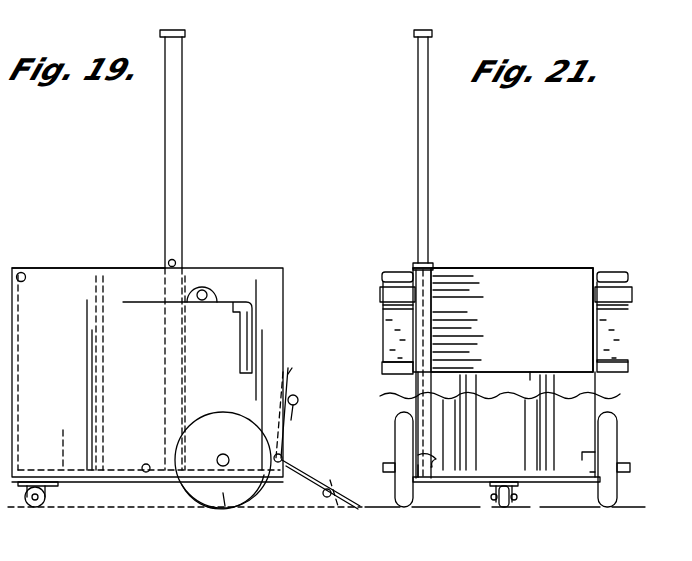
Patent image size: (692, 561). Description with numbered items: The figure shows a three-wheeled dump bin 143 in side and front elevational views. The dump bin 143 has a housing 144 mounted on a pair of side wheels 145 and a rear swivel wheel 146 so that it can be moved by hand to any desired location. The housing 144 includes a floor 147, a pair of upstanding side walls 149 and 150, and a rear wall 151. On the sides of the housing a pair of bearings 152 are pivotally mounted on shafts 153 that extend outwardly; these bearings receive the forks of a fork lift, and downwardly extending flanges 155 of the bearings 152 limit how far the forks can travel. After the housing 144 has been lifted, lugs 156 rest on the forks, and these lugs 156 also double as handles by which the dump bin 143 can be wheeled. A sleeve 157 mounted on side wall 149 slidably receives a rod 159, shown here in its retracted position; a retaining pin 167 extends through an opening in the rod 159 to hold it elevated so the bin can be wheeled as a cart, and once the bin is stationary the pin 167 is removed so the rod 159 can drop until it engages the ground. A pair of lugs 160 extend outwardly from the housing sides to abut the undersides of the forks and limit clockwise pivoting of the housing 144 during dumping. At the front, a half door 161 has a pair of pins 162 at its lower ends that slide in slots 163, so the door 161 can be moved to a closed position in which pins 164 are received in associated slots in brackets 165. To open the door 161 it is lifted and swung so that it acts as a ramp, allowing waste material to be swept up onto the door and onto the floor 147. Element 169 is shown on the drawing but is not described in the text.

In FIG. 19, the dump bin 143 is at (244, 225).
In FIG. 21, the dump bin 143 is at (531, 252).
In FIG. 19, the housing 144 is at (88, 268).
In FIG. 21, the housing 144 is at (514, 268).
In FIG. 19, the side wheels 145 is at (222, 508).
In FIG. 21, the side wheels 145 is at (420, 504).
In FIG. 19, the rear swivel wheel 146 is at (55, 506).
In FIG. 21, the rear swivel wheel 146 is at (505, 508).
In FIG. 19, the floor 147 is at (66, 452).
In FIG. 21, the floor 147 is at (502, 474).
In FIG. 19, the side wall 149 is at (133, 270).
In FIG. 21, the side wall 149 is at (434, 301).
In FIG. 21, the side wall 150 is at (594, 297).
In FIG. 19, the rear wall 151 is at (18, 323).
In FIG. 21, the rear wall 151 is at (552, 268).
In FIG. 19, the bearings 152 is at (217, 296).
In FIG. 21, the bearings 152 is at (381, 280).
In FIG. 19, the shafts 153 is at (203, 288).
In FIG. 21, the shafts 153 is at (378, 294).
In FIG. 19, the flanges 155 is at (236, 348).
In FIG. 21, the flanges 155 is at (384, 327).
In FIG. 19, the lugs 156 is at (19, 278).
In FIG. 21, the lugs 156 is at (397, 272).
In FIG. 19, the sleeve 157 is at (167, 373).
In FIG. 21, the sleeve 157 is at (440, 285).
In FIG. 19, the rod 159 is at (165, 144).
In FIG. 21, the rod 159 is at (431, 125).
In FIG. 19, the lugs 160 is at (146, 464).
In FIG. 21, the lugs 160 is at (390, 472).
In FIG. 19, the half door 161 is at (294, 373).
In FIG. 21, the half door 161 is at (535, 372).
In FIG. 19, the pins 162 is at (282, 451).
In FIG. 21, the pins 162 is at (583, 459).
In FIG. 19, the slots 163 is at (276, 481).
In FIG. 19, the pins 164 is at (298, 401).
In FIG. 21, the pins 164 is at (408, 374).
In FIG. 19, the brackets 165 is at (294, 422).
In FIG. 21, the brackets 165 is at (500, 422).
In FIG. 19, the retaining pin 167 is at (171, 262).
In FIG. 21, the retaining pin 167 is at (432, 263).
In FIG. 19, the brake pedal 169 is at (325, 498).